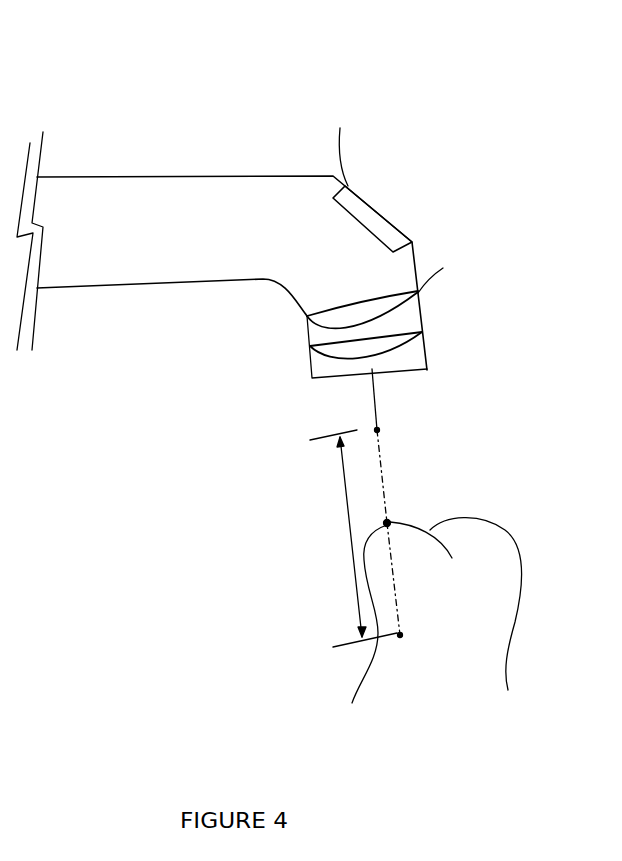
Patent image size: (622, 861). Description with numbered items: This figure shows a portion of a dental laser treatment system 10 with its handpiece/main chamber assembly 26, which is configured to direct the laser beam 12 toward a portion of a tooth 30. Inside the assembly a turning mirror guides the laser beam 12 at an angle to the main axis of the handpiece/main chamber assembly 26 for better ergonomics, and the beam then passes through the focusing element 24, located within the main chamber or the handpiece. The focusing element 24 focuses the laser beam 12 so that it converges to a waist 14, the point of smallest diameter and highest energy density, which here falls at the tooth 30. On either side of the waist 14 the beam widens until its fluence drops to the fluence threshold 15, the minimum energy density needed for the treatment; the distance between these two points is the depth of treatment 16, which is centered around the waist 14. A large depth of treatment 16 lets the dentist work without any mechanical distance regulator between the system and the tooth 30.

The dental laser treatment system 10 is at (230, 78).
The handpiece/main chamber assembly 26 is at (397, 222).
The focusing element 24 is at (425, 333).
The laser beam 12 is at (380, 401).
The waist 14 is at (388, 522).
The depth of treatment 16 is at (347, 523).
The fluence threshold 15 is at (340, 437).
The tooth 30 is at (515, 621).